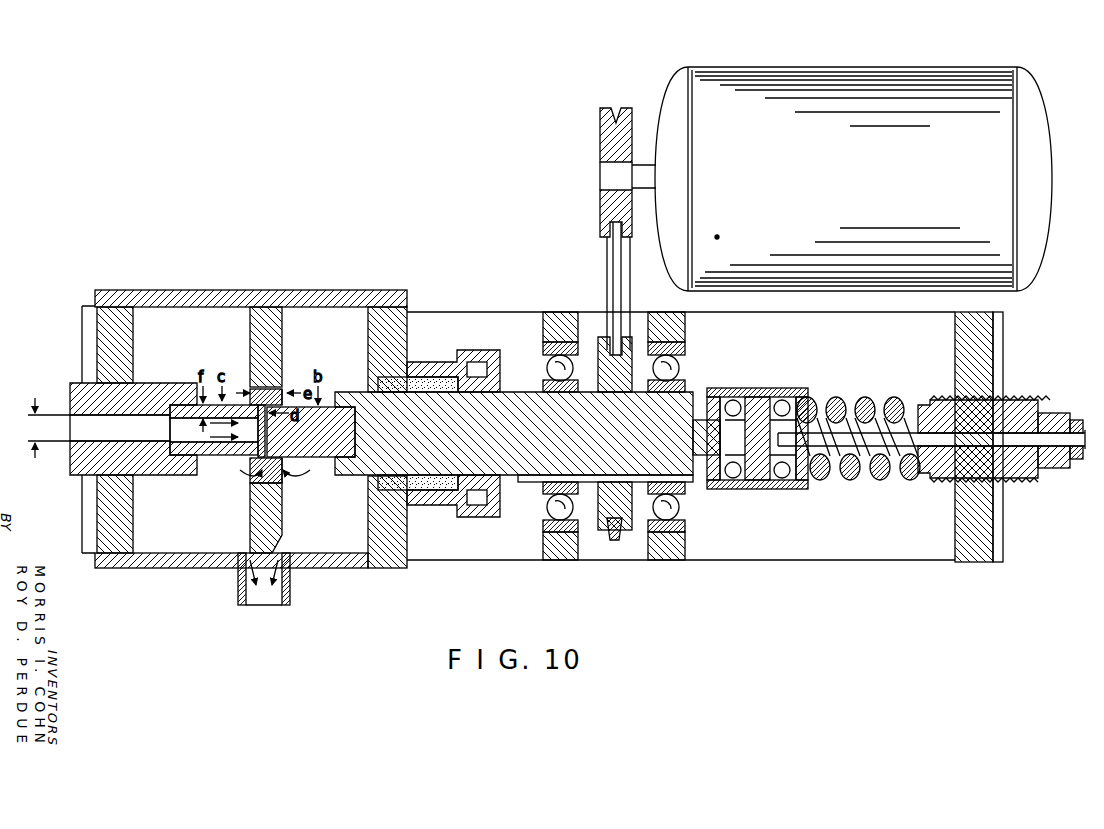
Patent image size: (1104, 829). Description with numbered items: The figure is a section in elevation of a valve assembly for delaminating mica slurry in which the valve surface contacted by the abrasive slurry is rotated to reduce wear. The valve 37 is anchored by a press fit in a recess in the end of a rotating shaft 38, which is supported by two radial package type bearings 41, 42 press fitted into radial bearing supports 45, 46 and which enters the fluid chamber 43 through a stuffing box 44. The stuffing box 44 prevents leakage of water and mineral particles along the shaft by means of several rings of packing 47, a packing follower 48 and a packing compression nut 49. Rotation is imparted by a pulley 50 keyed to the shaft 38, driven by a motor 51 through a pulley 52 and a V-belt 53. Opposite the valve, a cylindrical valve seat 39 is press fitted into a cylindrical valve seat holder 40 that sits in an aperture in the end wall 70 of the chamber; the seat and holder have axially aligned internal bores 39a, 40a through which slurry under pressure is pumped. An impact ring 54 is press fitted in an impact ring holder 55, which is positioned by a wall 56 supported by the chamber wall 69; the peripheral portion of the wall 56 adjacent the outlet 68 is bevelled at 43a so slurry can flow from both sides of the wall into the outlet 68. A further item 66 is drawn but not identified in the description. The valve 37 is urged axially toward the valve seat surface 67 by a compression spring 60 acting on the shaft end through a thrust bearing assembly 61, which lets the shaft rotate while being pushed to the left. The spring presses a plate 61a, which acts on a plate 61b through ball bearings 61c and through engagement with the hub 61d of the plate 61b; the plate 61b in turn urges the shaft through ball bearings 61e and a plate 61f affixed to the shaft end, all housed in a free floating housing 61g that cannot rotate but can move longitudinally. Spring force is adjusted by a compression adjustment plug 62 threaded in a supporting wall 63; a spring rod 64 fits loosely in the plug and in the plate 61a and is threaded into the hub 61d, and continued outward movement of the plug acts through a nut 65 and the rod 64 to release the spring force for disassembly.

The valve 37 is at (306, 442).
The rotating shaft 38 is at (513, 412).
The cylindrical valve seat 39 is at (225, 457).
The internal bore 39a is at (220, 456).
The cylindrical valve seat holder 40 is at (80, 465).
The internal bore 40a is at (127, 423).
The radial package type bearing 41 is at (549, 512).
The radial package type bearing 42 is at (676, 512).
The fluid chamber 43 is at (340, 312).
The bevel 43a is at (275, 548).
The stuffing box 44 is at (397, 548).
The radial bearing support 45 is at (565, 553).
The radial bearing support 46 is at (678, 545).
The packing 47 is at (425, 490).
The packing follower 48 is at (455, 492).
The packing compression nut 49 is at (487, 500).
The pulley 50 is at (628, 512).
The motor 51 is at (771, 97).
The pulley 52 is at (602, 146).
The V-belt 53 is at (612, 267).
The impact ring 54 is at (258, 470).
The impact ring holder 55 is at (255, 390).
The wall 56 is at (272, 326).
The compression spring 60 is at (881, 478).
The thrust bearing assembly 61 is at (740, 470).
The plate 61a is at (803, 392).
The plate 61b is at (757, 398).
The ball bearings 61c is at (780, 400).
The hub 61d is at (806, 436).
The ball bearings 61e is at (735, 400).
The plate 61f is at (716, 472).
The free floating housing 61g is at (793, 400).
The compression adjustment plug 62 is at (939, 470).
The supporting wall 63 is at (982, 553).
The spring rod 64 is at (1047, 452).
The nut 65 is at (1074, 463).
The orifice gap 66 is at (284, 455).
The valve seat surface 67 is at (253, 457).
The outlet 68 is at (268, 590).
The wall 69 is at (212, 561).
The end wall 70 is at (118, 520).